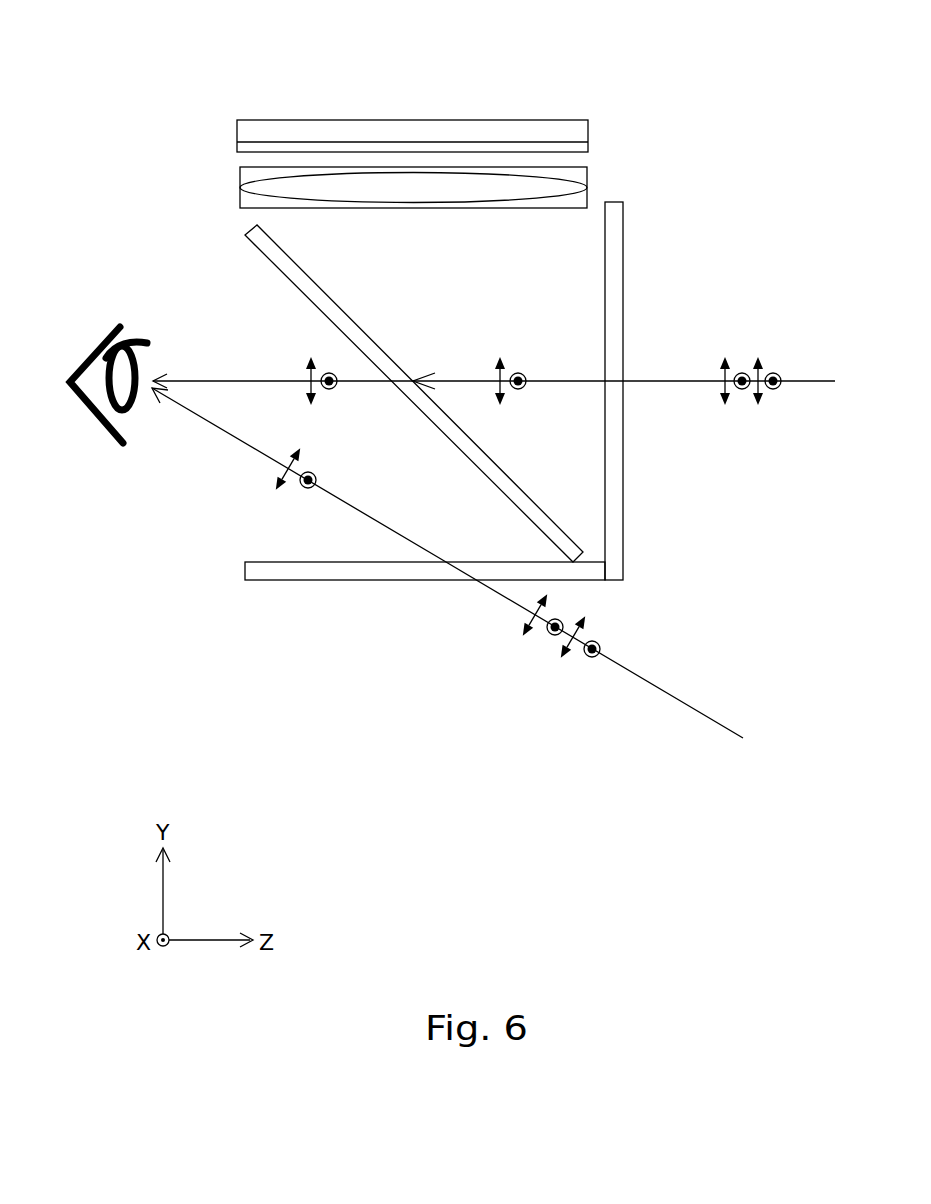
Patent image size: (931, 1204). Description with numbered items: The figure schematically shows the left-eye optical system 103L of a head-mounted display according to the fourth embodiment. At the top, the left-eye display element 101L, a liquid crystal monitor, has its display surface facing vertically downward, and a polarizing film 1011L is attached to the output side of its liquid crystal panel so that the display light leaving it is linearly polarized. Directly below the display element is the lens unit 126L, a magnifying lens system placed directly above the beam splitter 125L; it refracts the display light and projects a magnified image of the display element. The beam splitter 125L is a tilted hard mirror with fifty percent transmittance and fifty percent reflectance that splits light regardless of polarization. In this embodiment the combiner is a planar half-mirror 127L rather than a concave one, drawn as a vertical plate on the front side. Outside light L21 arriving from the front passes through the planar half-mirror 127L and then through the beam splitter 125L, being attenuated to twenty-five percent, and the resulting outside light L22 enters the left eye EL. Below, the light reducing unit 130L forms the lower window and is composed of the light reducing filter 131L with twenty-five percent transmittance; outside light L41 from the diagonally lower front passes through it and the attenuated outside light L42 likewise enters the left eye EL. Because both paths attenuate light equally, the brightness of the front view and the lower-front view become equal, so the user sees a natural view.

The left-eye display element 101L is at (335, 120).
The polarizing film 1011L is at (517, 146).
The left-eye optical system 103L is at (667, 122).
The lens unit 126L is at (588, 178).
The planar half-mirror 127L is at (623, 240).
The beam splitter 125L is at (243, 233).
The light reducing filter 131L is at (278, 580).
The light reducing unit 130L is at (198, 692).
The outside light L21 is at (665, 383).
The outside light L22 is at (242, 380).
The outside light L41 is at (710, 718).
The outside light L42 is at (263, 460).
The left eye EL is at (100, 420).